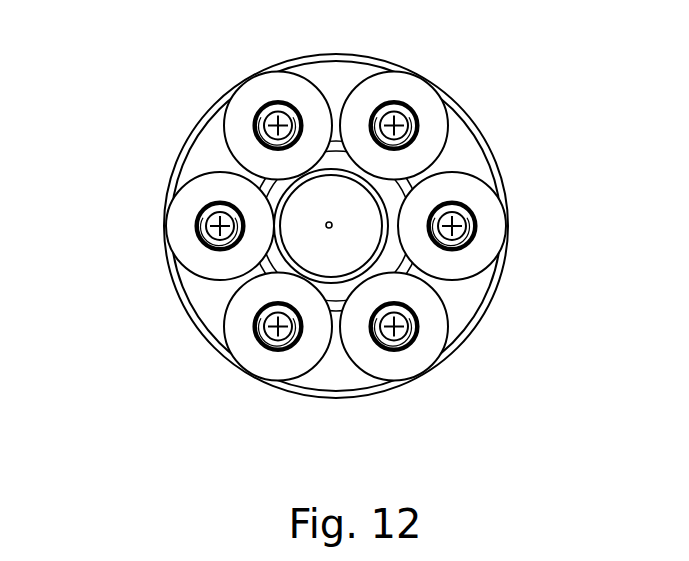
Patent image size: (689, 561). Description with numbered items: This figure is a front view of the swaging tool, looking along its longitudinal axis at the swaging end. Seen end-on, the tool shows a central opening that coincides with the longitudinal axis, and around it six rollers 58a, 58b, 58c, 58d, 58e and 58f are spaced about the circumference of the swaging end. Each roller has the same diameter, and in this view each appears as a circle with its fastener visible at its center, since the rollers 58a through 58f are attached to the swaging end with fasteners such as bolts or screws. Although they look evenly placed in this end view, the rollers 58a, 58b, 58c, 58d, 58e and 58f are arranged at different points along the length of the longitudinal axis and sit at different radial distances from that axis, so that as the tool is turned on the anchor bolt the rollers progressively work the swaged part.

The roller 58a is at (258, 93).
The roller 58b is at (408, 87).
The roller 58c is at (482, 207).
The roller 58d is at (415, 360).
The roller 58e is at (268, 365).
The roller 58f is at (178, 226).